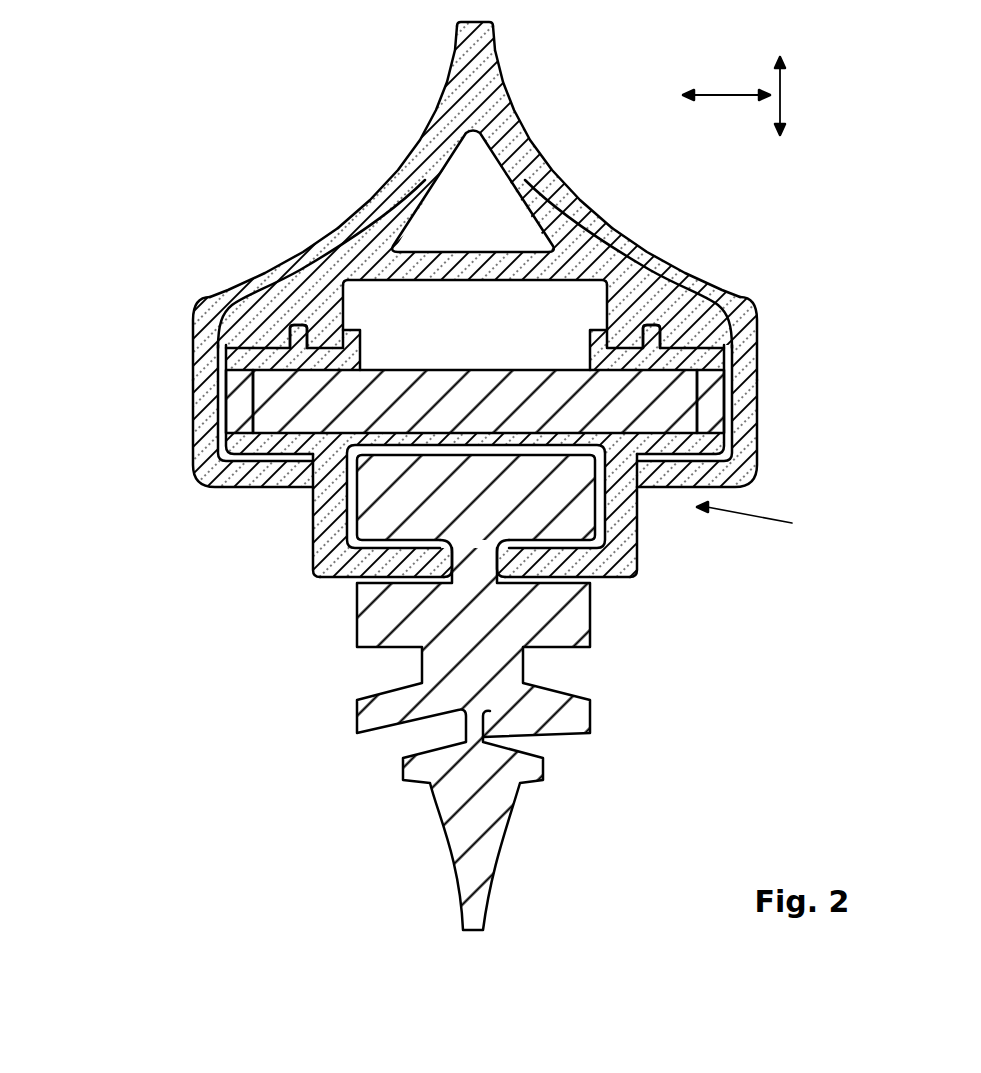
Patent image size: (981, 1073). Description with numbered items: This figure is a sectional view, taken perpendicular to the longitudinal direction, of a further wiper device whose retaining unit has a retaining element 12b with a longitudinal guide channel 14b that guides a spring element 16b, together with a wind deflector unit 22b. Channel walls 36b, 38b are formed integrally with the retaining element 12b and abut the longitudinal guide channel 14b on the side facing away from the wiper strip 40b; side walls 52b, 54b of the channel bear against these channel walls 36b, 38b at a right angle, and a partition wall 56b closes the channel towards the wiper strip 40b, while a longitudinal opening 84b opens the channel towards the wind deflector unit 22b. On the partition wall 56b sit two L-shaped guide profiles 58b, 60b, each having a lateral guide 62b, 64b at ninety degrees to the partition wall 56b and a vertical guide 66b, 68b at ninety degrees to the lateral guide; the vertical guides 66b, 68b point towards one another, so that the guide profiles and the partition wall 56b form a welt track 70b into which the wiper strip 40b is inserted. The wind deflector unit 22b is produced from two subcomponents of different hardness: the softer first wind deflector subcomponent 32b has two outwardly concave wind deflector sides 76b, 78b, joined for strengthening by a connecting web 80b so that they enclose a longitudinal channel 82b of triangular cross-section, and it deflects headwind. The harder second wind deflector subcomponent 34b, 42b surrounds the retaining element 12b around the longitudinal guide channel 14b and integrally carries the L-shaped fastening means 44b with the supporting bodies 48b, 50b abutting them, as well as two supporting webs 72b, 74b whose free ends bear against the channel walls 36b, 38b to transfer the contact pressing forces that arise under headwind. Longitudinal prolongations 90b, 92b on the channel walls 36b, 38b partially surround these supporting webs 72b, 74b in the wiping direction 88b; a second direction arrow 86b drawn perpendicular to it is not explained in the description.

The retaining element 12b is at (237, 403).
The longitudinal guide channel 14b is at (680, 398).
The spring element 16b is at (410, 412).
The wind deflector unit 22b is at (312, 168).
The first wind deflector subcomponent 32b is at (458, 35).
The second wind deflector subcomponent 34b is at (263, 287).
The channel wall 36b is at (250, 360).
The channel wall 38b is at (693, 357).
The wiper strip 40b is at (373, 698).
The second wind deflector subcomponent 42b is at (742, 325).
The L-shaped fastening means 44b is at (243, 477).
The supporting body 48b is at (230, 330).
The supporting body 50b is at (717, 330).
The side wall 52b is at (237, 433).
The side wall 54b is at (713, 423).
The partition wall 56b is at (513, 440).
The L-shaped guide profile 58b is at (333, 580).
The L-shaped guide profile 60b is at (613, 567).
The lateral guide 62b is at (333, 532).
The lateral guide 64b is at (610, 530).
The vertical guide 66b is at (410, 570).
The vertical guide 68b is at (567, 565).
The welt track 70b is at (737, 457).
The supporting web 72b is at (323, 293).
The supporting web 74b is at (625, 292).
The wind deflector side 76b is at (436, 110).
The wind deflector side 78b is at (512, 108).
The connecting web 80b is at (497, 265).
The longitudinal channel 82b is at (497, 229).
The longitudinal opening 84b is at (497, 343).
The vertical direction 86b is at (784, 97).
The wiping direction 88b is at (730, 93).
The longitudinal prolongation 90b is at (318, 333).
The longitudinal prolongation 92b is at (640, 333).